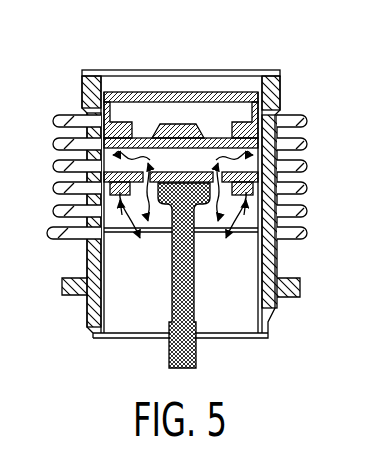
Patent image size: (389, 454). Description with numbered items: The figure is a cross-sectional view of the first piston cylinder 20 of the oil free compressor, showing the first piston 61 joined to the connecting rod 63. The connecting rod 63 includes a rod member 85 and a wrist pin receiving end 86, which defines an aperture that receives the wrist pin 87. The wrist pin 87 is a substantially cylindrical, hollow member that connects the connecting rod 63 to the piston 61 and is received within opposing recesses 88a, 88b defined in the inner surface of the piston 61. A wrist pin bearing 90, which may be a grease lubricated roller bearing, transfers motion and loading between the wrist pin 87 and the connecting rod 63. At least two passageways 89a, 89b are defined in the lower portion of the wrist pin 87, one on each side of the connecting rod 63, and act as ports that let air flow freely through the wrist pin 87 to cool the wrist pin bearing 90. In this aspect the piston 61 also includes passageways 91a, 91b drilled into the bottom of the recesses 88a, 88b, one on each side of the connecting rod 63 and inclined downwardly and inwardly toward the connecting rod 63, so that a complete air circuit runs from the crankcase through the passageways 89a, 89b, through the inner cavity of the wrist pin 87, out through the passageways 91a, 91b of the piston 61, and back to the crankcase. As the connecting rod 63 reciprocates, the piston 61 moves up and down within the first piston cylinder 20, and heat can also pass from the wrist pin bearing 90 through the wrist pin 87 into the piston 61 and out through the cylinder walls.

The first piston cylinder 20 is at (198, 202).
The first piston 61 is at (196, 93).
The connecting rod 63 is at (205, 352).
The rod member 85 is at (176, 298).
The wrist pin receiving end 86 is at (173, 126).
The wrist pin 87 is at (150, 133).
The recess 88a is at (66, 198).
The recess 88b is at (292, 128).
The passageway 89a is at (118, 200).
The passageway 89b is at (229, 233).
The wrist pin bearing 90 is at (207, 134).
The passageway 91a is at (103, 205).
The passageway 91b is at (278, 170).